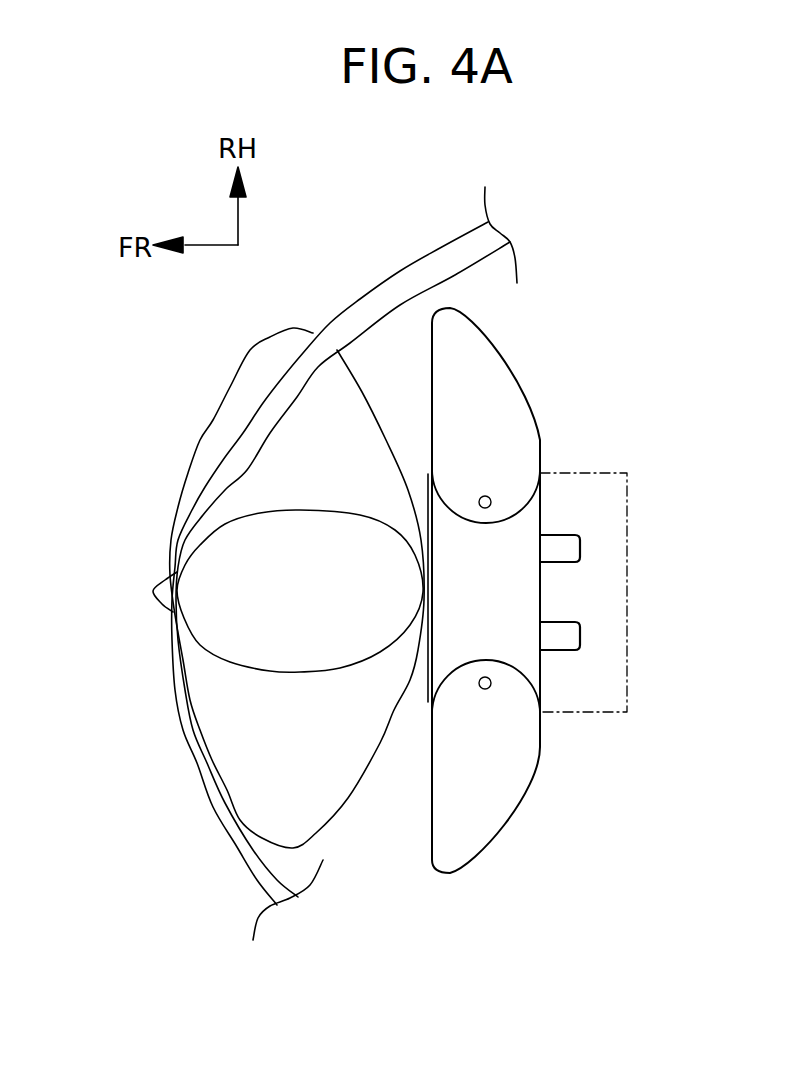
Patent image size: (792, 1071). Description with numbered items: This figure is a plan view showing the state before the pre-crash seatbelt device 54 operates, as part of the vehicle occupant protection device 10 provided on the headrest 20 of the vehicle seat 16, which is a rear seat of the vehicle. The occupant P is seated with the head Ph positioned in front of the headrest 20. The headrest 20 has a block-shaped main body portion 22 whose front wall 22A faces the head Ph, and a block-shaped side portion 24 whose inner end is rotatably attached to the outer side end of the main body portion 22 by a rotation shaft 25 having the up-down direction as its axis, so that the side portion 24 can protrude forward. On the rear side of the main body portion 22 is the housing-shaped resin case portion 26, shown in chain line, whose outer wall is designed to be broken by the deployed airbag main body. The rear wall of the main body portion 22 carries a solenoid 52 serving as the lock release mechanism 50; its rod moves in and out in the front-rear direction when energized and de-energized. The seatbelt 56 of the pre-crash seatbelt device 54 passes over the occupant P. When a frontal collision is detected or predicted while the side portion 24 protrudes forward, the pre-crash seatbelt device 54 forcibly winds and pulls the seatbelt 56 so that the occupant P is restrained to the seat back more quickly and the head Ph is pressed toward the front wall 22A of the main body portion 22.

The vehicle occupant protection device 10 is at (650, 316).
The vehicle seat 16 is at (431, 880).
The headrest 20 is at (562, 418).
The main body portion 22 is at (432, 643).
The front wall 22A is at (420, 548).
The side portion 24 is at (478, 350).
The rotation shaft 25 is at (485, 510).
The case portion 26 is at (628, 503).
The lock release mechanism 50 is at (560, 529).
The solenoid 52 is at (581, 547).
The pre-crash seatbelt device 54 is at (423, 247).
The seatbelt 56 is at (357, 314).
The occupant P is at (208, 447).
The head Ph is at (288, 666).